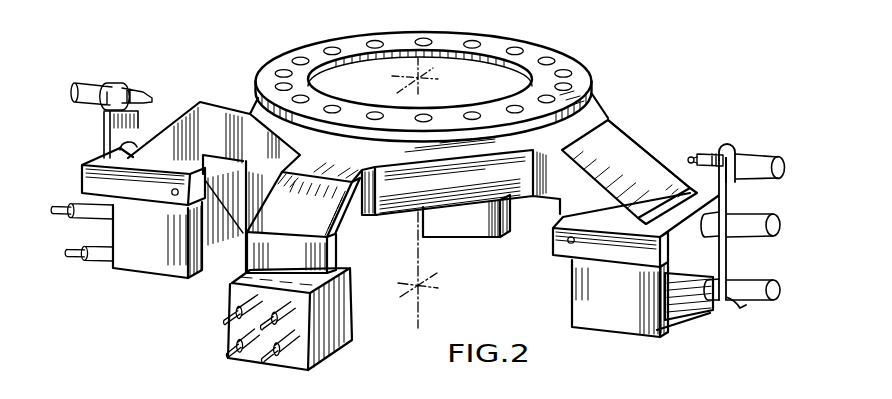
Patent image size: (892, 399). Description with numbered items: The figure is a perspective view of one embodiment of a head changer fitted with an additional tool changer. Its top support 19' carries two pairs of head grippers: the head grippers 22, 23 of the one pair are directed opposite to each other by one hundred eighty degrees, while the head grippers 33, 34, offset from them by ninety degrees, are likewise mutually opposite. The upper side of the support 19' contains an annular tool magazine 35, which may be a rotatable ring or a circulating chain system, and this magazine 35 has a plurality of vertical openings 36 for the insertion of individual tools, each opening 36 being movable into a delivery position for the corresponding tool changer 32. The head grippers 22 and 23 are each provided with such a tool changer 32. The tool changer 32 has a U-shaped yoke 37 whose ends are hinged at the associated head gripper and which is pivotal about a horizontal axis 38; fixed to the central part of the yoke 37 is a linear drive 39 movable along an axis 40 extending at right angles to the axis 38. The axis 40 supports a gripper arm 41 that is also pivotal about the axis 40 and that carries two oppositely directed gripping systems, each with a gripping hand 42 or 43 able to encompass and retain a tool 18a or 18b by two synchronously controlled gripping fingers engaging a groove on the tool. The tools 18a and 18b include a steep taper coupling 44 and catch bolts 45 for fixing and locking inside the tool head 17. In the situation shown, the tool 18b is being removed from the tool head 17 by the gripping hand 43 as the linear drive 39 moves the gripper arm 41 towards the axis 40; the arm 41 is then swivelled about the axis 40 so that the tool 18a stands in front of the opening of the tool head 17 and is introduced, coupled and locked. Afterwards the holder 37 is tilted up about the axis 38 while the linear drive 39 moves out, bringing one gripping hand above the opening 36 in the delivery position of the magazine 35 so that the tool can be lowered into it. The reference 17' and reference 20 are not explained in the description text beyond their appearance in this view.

The tool head 17 is at (446, 297).
The left support block 17' is at (128, 235).
The tool 18a is at (773, 158).
The tool 18b is at (758, 305).
The top support 19' is at (453, 69).
The inclined plate edge 20 is at (612, 128).
The head gripper 22 is at (590, 178).
The head gripper 23 is at (173, 140).
The tool changer 32 is at (100, 122).
The head gripper 33 is at (349, 218).
The head gripper 34 is at (603, 118).
The annular tool magazine 35 is at (480, 41).
The vertical openings 36 is at (540, 50).
The U-shaped yoke 37 is at (640, 253).
The horizontal axis 38 is at (567, 240).
The linear drive 39 is at (690, 256).
The axis 40 is at (780, 225).
The gripper arm 41 is at (740, 197).
The gripping hand 42 is at (725, 152).
The gripping hand 43 is at (728, 307).
The steep taper coupling 44 is at (712, 153).
The catch bolts 45 is at (688, 157).